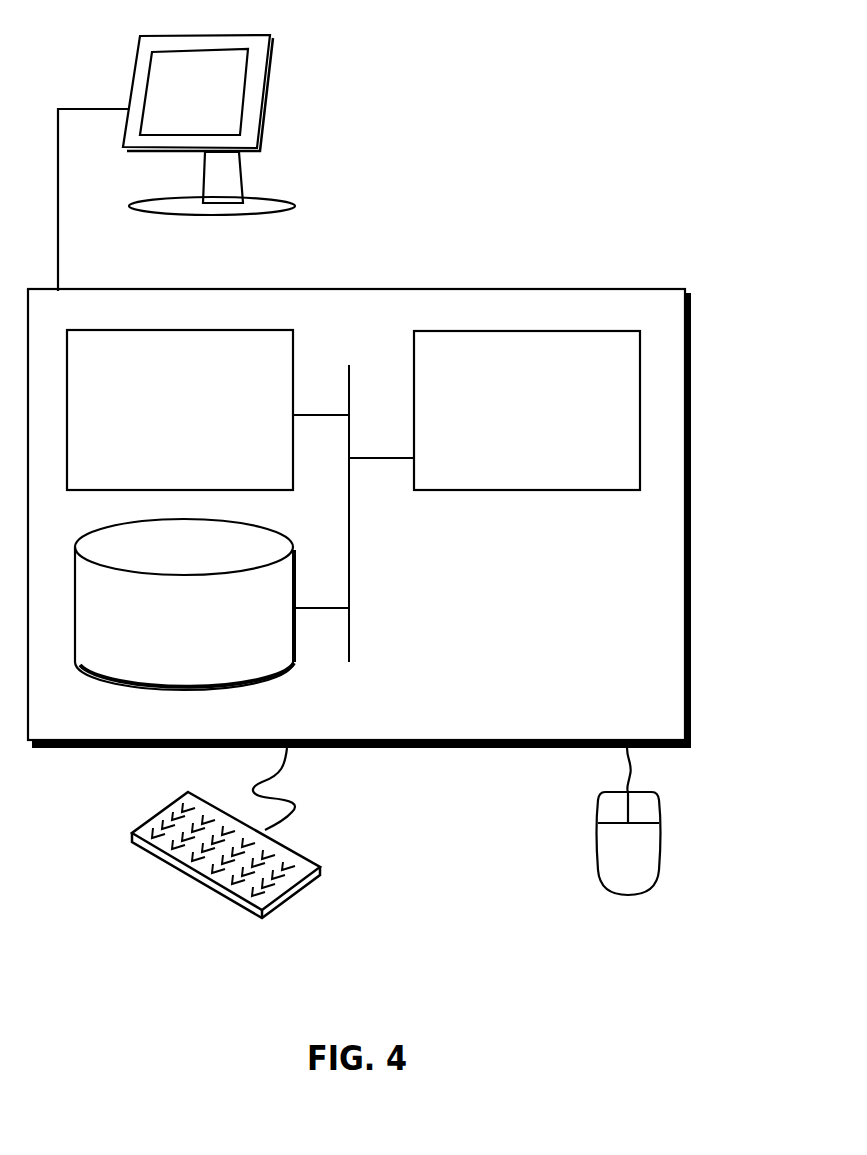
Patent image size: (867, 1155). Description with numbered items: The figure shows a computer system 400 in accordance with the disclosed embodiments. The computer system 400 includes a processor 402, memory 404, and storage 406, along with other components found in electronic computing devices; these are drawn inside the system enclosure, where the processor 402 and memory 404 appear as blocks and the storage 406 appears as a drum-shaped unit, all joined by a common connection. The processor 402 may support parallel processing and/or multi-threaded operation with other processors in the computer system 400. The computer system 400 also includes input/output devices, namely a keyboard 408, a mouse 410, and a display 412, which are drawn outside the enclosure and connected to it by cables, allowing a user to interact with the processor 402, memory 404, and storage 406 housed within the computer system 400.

The computer system 400 is at (403, 267).
The processor 402 is at (507, 422).
The memory 404 is at (157, 422).
The storage 406 is at (164, 634).
The keyboard 408 is at (150, 855).
The mouse 410 is at (605, 865).
The display 412 is at (176, 163).